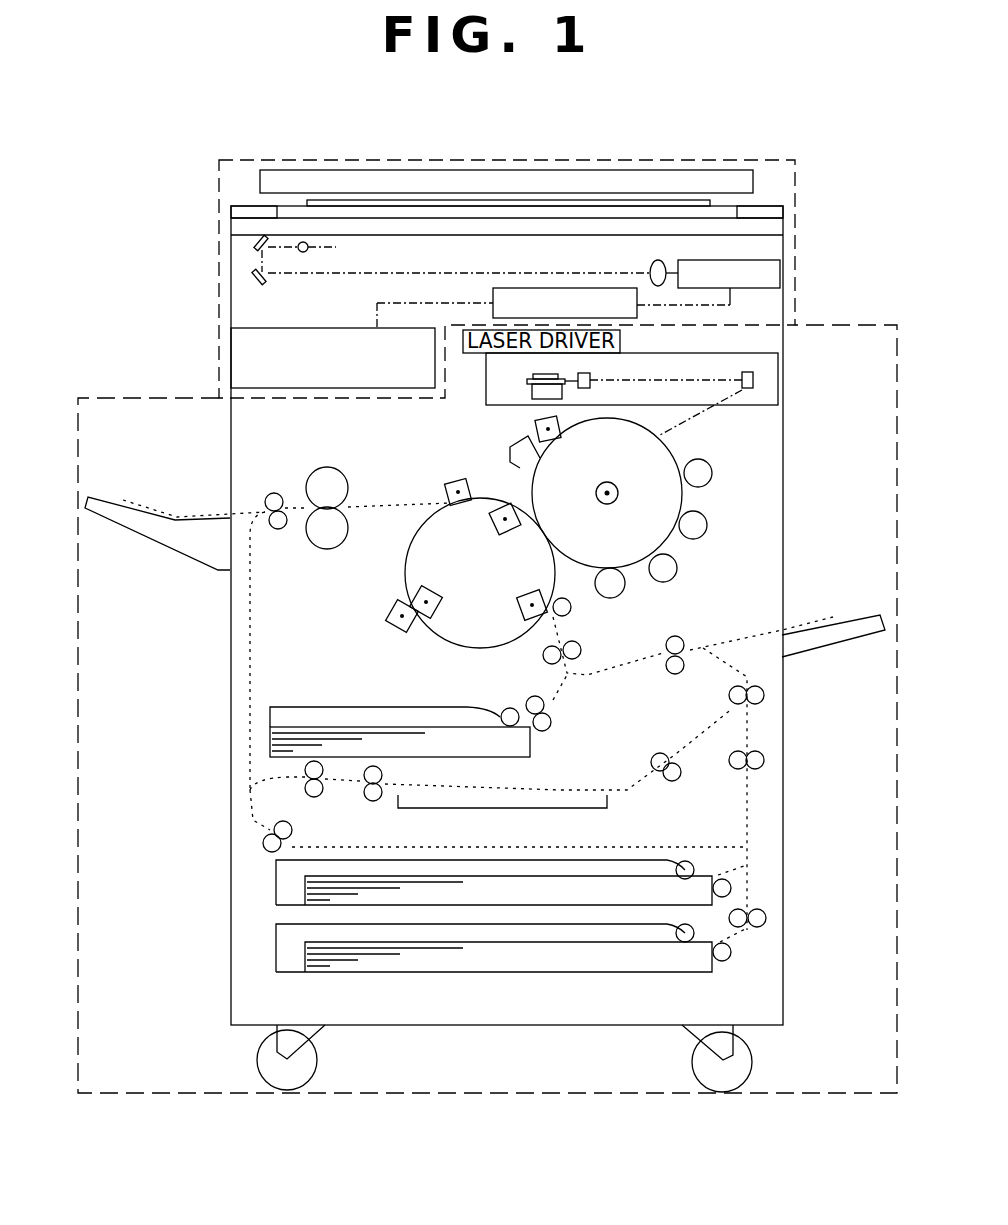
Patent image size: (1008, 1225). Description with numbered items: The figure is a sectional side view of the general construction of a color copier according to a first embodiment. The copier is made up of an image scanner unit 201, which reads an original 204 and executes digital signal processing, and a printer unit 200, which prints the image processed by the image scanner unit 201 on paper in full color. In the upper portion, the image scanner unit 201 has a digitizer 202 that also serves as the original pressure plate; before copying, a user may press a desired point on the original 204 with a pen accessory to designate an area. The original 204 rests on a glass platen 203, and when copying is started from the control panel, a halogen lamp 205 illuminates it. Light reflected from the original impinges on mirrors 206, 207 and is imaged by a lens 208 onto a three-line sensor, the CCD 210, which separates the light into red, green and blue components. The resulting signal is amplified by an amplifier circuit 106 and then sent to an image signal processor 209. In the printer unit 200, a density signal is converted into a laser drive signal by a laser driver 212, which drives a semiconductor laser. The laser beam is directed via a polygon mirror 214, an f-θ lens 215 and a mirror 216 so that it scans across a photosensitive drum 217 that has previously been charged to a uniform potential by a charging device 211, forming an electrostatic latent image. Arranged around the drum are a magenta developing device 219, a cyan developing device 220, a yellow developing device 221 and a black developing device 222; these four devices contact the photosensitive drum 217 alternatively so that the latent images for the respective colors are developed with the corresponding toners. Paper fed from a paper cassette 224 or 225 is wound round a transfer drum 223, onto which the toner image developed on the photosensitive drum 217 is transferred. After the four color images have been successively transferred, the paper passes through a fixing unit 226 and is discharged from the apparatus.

The printer unit 200 is at (142, 396).
The image scanner unit 201 is at (270, 168).
The digitizer 202 is at (318, 178).
The glass platen 203 is at (390, 212).
The original 204 is at (305, 204).
The halogen lamp 205 is at (308, 247).
The mirror 206 is at (254, 242).
The mirror 207 is at (252, 279).
The lens 208 is at (650, 264).
The image signal processor 209 is at (330, 389).
The 3-line sensor (CCD) 210 is at (763, 277).
The amplifier circuit 106 is at (520, 288).
The charging device 211 is at (537, 417).
The laser driver 212 is at (472, 322).
The polygon mirror 214 is at (540, 393).
The f-θ lens 215 is at (590, 378).
The mirror 216 is at (755, 382).
The photosensitive drum 217 is at (657, 453).
The magenta developing device 219 is at (705, 477).
The cyan developing device 220 is at (695, 533).
The yellow developing device 221 is at (662, 578).
The black developing device 222 is at (610, 588).
The transfer drum 223 is at (448, 630).
The paper cassette 224 is at (270, 737).
The paper cassette 225 is at (292, 947).
The fixing unit 226 is at (328, 545).